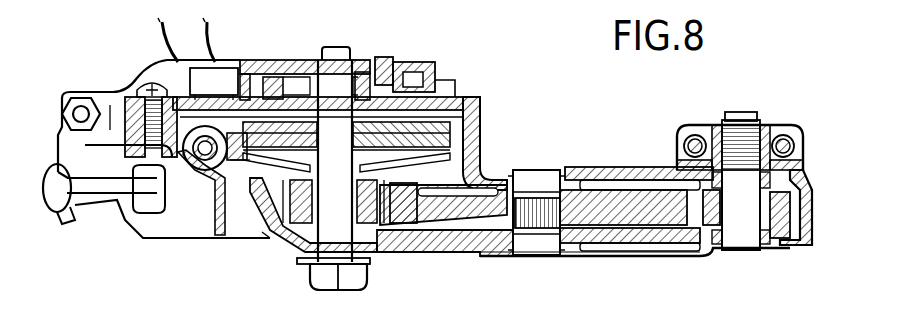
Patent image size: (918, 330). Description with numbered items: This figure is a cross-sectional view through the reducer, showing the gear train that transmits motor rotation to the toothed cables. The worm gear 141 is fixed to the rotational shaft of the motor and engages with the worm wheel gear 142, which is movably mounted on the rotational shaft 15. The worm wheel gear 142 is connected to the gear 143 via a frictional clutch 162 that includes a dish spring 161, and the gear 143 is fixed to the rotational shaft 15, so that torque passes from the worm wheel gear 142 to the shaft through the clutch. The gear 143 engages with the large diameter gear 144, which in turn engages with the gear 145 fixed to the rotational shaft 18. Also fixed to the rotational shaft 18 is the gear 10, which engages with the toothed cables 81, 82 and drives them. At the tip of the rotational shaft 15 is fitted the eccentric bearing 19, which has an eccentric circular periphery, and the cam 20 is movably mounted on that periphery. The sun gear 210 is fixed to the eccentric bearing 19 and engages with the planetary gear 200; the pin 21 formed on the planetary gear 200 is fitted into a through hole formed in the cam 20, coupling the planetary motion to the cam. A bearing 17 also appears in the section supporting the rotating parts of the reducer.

The gear 10 is at (762, 127).
The rotational shaft 15 is at (333, 288).
The bearing 17 is at (536, 243).
The rotational shaft 18 is at (734, 246).
The eccentric bearing 19 is at (363, 58).
The cam 20 is at (405, 58).
The pin 21 is at (390, 57).
The toothed cable 81 is at (800, 136).
The toothed cable 82 is at (687, 128).
The worm gear 141 is at (205, 183).
The worm wheel gear 142 is at (235, 185).
The gear 143 is at (377, 228).
The large diameter gear 144 is at (580, 183).
The gear 145 is at (785, 248).
The dish spring 161 is at (273, 243).
The frictional clutch 162 is at (255, 172).
The planetary gear 200 is at (293, 57).
The sun gear 210 is at (430, 84).